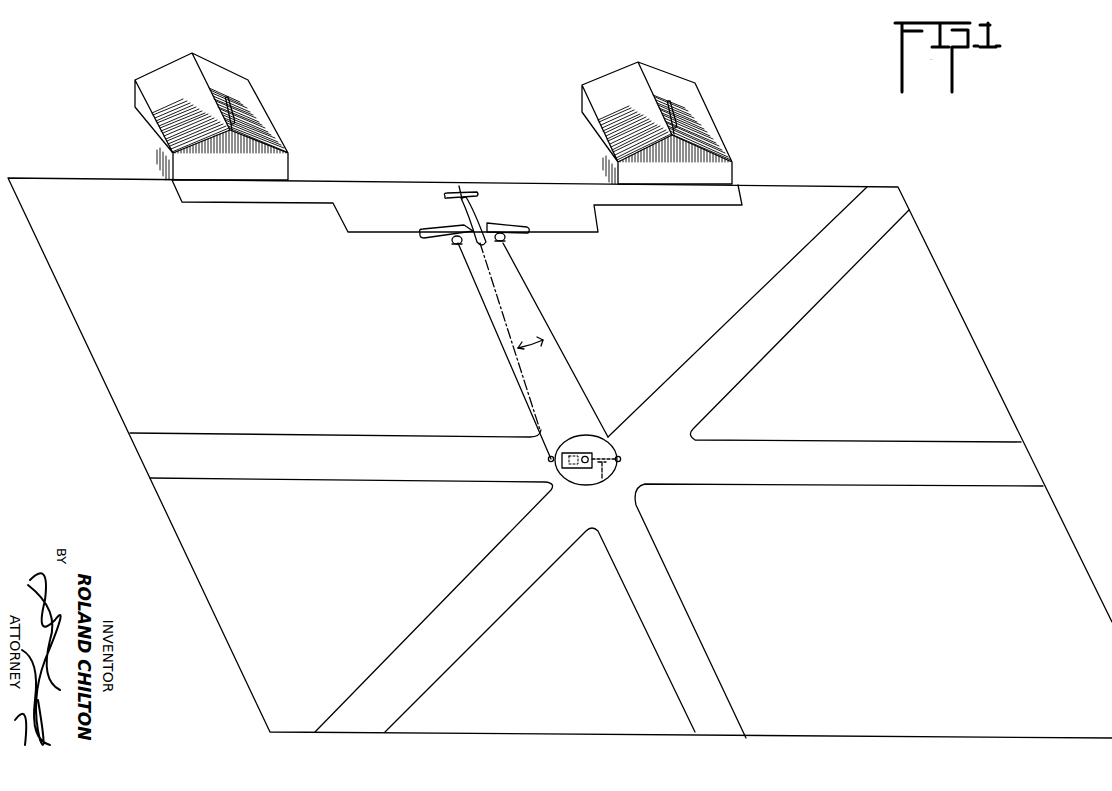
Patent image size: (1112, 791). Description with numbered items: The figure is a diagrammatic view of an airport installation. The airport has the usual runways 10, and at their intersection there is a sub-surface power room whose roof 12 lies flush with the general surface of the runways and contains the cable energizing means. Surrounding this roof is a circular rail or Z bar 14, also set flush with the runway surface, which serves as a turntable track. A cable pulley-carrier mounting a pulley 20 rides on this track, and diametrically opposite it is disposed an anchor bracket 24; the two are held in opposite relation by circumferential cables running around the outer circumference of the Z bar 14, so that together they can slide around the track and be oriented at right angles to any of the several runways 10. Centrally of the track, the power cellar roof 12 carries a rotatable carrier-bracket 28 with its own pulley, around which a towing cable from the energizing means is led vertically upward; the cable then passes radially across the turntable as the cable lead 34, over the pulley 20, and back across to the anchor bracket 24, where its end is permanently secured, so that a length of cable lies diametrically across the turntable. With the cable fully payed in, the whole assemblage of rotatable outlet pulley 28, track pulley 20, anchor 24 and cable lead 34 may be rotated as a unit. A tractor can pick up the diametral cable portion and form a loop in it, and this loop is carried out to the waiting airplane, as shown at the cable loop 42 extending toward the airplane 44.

The runway 10 is at (830, 289).
The roof 12 is at (565, 468).
The circular rail or Z bar 14 is at (615, 470).
The pulley 20 is at (621, 459).
The anchor bracket 24 is at (548, 459).
The rotatable carrier-bracket 28 is at (585, 456).
The cable lead 34 is at (607, 484).
The cable loop 42 is at (510, 334).
The airplane 44 is at (494, 222).